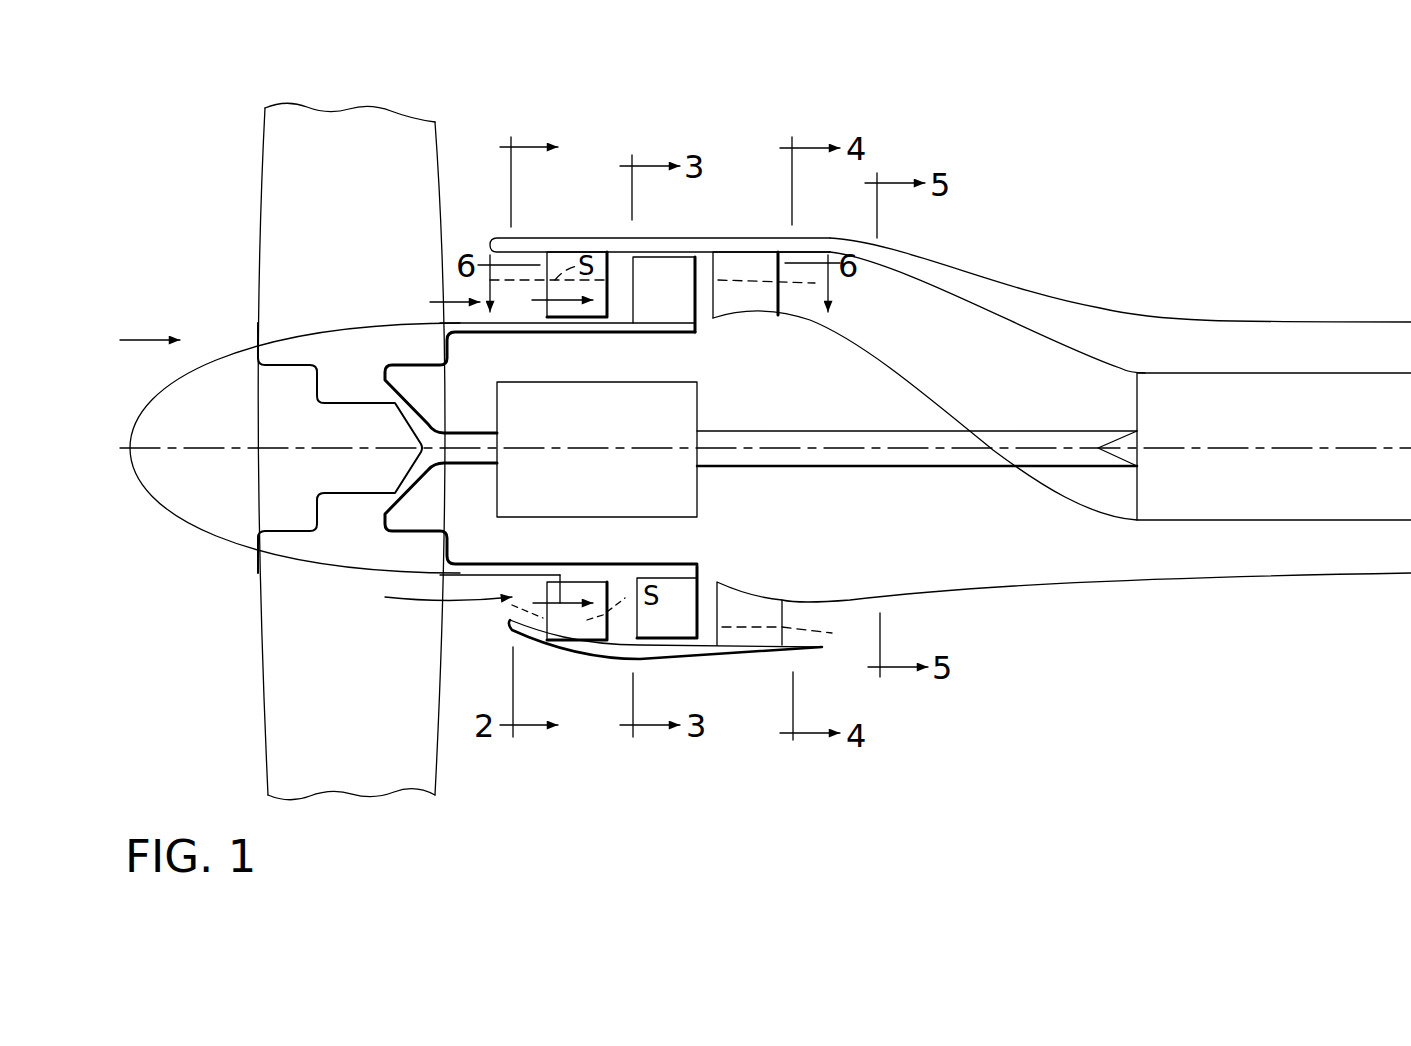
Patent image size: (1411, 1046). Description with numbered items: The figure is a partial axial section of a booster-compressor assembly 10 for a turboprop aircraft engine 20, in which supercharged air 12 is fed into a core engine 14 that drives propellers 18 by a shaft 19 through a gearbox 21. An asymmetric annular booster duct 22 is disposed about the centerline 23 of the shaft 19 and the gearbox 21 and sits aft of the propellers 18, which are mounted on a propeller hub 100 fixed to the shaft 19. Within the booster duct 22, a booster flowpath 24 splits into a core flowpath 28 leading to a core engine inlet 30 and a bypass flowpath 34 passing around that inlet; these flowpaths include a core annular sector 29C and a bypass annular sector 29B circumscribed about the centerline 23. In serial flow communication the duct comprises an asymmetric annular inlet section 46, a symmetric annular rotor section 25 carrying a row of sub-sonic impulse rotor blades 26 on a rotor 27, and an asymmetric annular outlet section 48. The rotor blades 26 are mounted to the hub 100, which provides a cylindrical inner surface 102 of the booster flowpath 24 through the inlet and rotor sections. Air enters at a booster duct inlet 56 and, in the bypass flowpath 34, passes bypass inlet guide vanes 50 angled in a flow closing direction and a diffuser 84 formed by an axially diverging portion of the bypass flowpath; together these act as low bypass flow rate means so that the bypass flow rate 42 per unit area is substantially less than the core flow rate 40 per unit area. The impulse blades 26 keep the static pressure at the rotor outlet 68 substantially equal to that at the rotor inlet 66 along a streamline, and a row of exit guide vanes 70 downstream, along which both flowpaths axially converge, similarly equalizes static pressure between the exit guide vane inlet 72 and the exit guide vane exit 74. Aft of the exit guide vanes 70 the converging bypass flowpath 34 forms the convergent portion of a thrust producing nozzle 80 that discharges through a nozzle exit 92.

The booster-compressor assembly 10 is at (653, 133).
The air 12 is at (122, 338).
The core engine 14 is at (1315, 372).
The propellers 18 is at (265, 690).
The shaft 19 is at (940, 430).
The turboprop aircraft engine 20 is at (679, 801).
The gearbox 21 is at (700, 410).
The asymmetric annular booster duct 22 is at (496, 243).
The centerline 23 is at (210, 455).
The booster flowpath 24 is at (462, 288).
The symmetric annular rotor section 25 is at (670, 250).
The rotor blades 26 is at (664, 294).
The rotor 27 is at (418, 367).
The core flowpath 28 is at (432, 302).
The bypass annular sector 29B is at (523, 597).
The core annular sector 29C is at (512, 303).
The core engine inlet 30 is at (848, 293).
The bypass flowpath 34 is at (500, 598).
The core flow rate 40 is at (560, 300).
The bypass flow rate 42 is at (562, 577).
The asymmetric annular inlet section 46 is at (559, 235).
The asymmetric annular outlet section 48 is at (733, 238).
The bypass inlet guide vanes 50 is at (590, 628).
The booster duct inlet 56 is at (498, 615).
The rotor inlet 66 is at (622, 585).
The rotor outlet 68 is at (707, 613).
The exit guide vanes 70 is at (745, 285).
The exit guide vane inlet 72 is at (705, 298).
The exit guide vane exit 74 is at (787, 290).
The thrust producing nozzle 80 is at (782, 600).
The diffuser 84 is at (538, 623).
The nozzle exit 92 is at (827, 640).
The propeller hub 100 is at (425, 599).
The cylindrical inner surface 102 is at (626, 324).